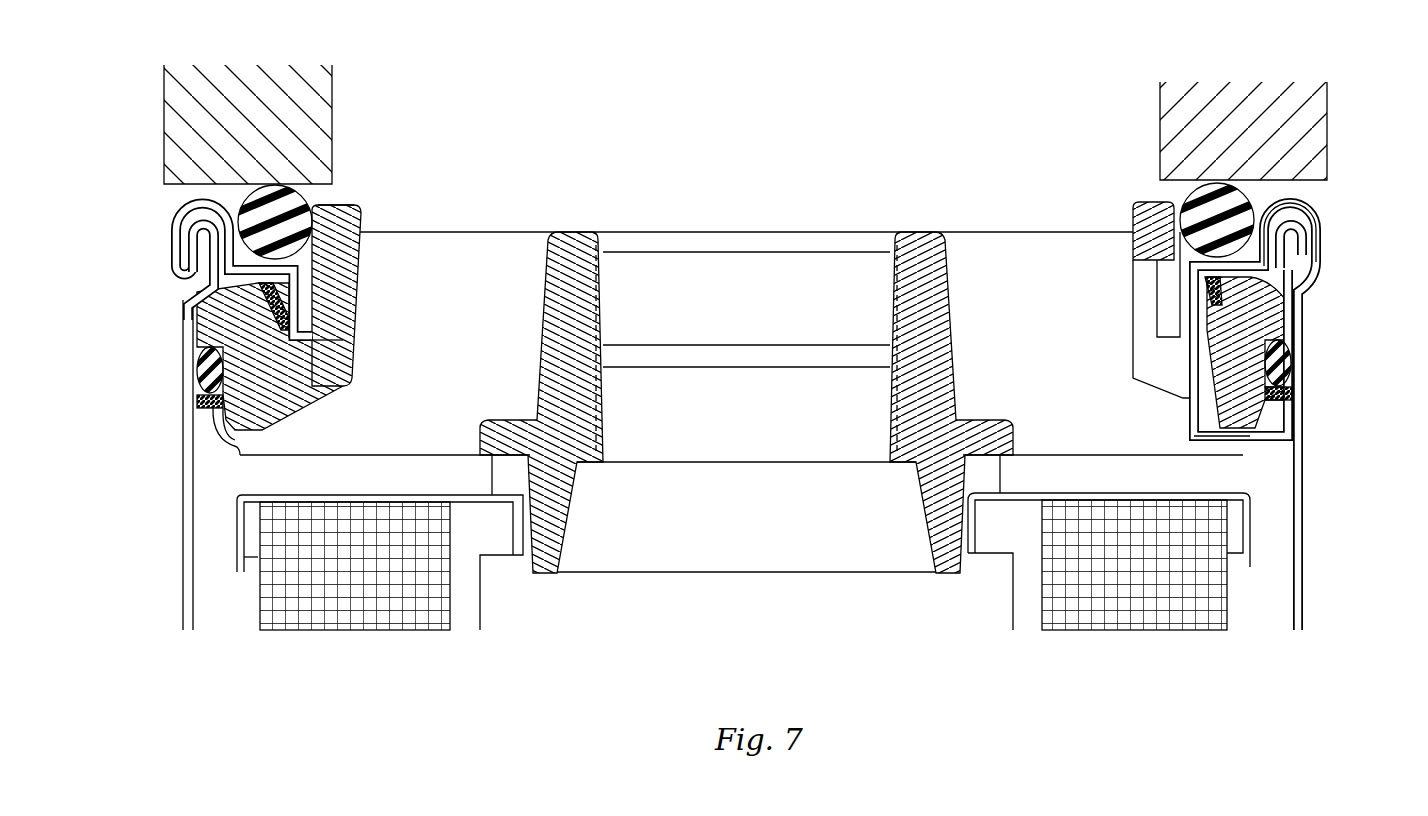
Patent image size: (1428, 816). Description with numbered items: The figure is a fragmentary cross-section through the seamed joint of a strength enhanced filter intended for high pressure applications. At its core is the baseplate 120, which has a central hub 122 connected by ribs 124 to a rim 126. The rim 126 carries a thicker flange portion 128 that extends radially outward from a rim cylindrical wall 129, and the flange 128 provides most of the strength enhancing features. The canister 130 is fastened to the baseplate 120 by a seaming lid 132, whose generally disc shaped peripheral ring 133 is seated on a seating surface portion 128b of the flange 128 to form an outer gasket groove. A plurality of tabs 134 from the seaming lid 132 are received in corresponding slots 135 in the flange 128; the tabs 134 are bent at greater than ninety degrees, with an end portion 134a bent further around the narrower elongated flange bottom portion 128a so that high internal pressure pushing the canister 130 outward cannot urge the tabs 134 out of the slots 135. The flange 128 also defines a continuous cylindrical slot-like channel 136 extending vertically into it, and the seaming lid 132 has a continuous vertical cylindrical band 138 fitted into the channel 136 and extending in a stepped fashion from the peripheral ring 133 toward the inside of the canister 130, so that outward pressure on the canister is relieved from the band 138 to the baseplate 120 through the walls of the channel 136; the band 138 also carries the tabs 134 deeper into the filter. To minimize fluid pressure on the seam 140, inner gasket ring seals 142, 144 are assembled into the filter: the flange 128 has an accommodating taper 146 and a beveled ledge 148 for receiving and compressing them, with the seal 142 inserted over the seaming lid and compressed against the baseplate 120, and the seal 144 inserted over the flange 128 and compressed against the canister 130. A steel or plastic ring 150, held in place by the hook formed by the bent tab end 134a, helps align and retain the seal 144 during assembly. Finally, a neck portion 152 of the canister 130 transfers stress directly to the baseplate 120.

The baseplate 120 is at (944, 598).
The central hub 122 is at (587, 425).
The ribs 124 is at (745, 318).
The rim 126 is at (348, 290).
The flange portion 128 is at (338, 387).
The flange bottom portion 128a is at (1262, 391).
The seating surface portion 128b is at (1245, 293).
The rim cylindrical wall 129 is at (305, 272).
The canister 130 is at (183, 590).
The seaming lid 132 is at (168, 213).
The peripheral ring 133 is at (1180, 280).
The tabs 134 is at (1200, 385).
The tab end portion 134a is at (1263, 455).
The slots 135 is at (1160, 347).
The channel 136 is at (348, 264).
The cylindrical band 138 is at (345, 350).
The seam 140 is at (1358, 243).
The inner gasket ring seal 142 is at (289, 300).
The inner gasket ring seal 144 is at (199, 371).
The taper 146 is at (293, 418).
The beveled ledge 148 is at (266, 312).
The ring 150 is at (213, 405).
The neck portion 152 is at (1318, 268).